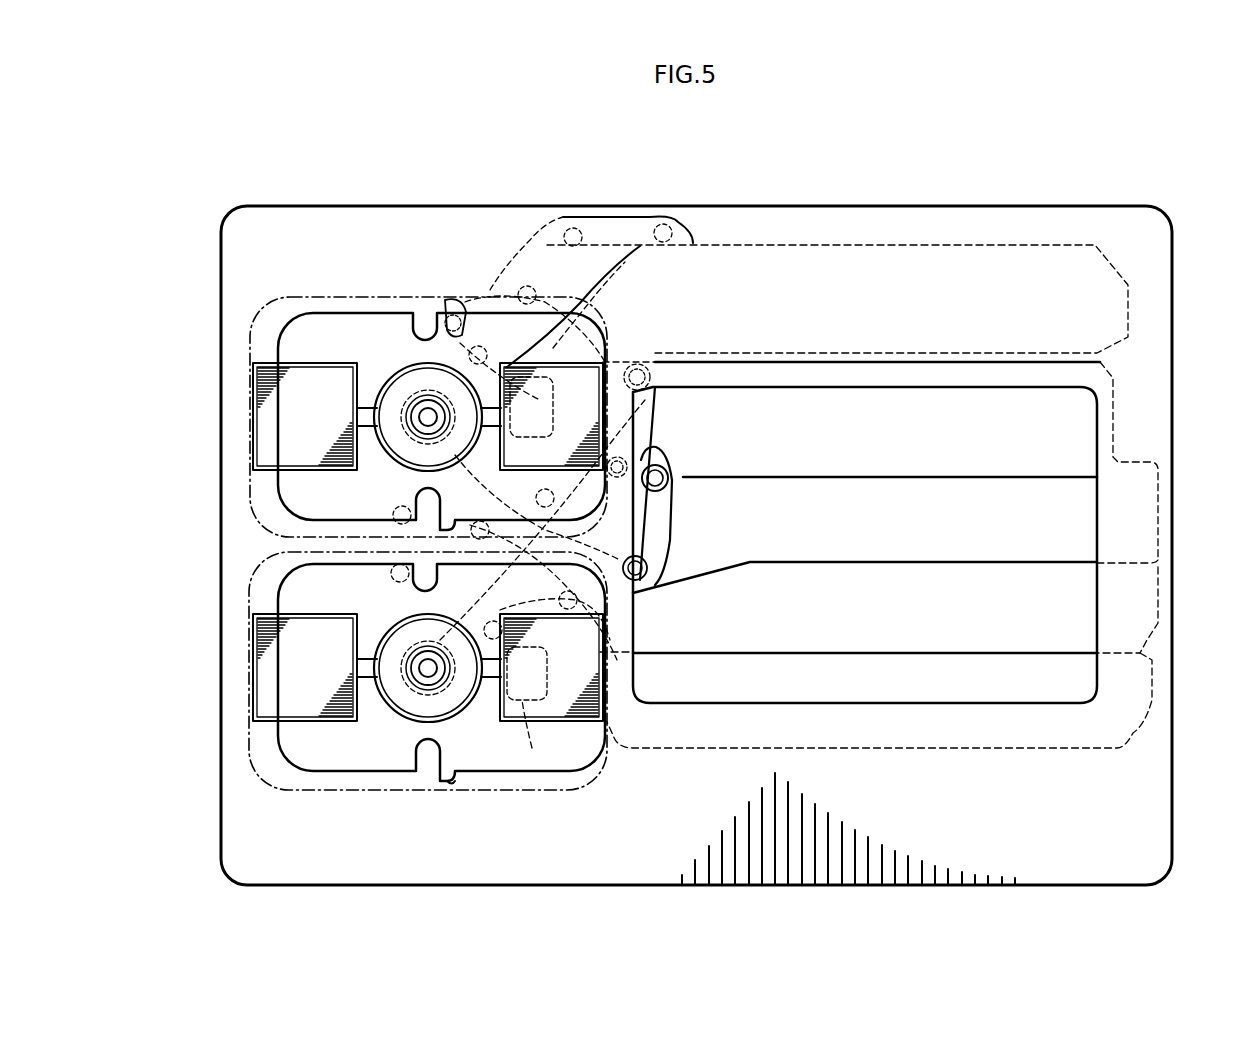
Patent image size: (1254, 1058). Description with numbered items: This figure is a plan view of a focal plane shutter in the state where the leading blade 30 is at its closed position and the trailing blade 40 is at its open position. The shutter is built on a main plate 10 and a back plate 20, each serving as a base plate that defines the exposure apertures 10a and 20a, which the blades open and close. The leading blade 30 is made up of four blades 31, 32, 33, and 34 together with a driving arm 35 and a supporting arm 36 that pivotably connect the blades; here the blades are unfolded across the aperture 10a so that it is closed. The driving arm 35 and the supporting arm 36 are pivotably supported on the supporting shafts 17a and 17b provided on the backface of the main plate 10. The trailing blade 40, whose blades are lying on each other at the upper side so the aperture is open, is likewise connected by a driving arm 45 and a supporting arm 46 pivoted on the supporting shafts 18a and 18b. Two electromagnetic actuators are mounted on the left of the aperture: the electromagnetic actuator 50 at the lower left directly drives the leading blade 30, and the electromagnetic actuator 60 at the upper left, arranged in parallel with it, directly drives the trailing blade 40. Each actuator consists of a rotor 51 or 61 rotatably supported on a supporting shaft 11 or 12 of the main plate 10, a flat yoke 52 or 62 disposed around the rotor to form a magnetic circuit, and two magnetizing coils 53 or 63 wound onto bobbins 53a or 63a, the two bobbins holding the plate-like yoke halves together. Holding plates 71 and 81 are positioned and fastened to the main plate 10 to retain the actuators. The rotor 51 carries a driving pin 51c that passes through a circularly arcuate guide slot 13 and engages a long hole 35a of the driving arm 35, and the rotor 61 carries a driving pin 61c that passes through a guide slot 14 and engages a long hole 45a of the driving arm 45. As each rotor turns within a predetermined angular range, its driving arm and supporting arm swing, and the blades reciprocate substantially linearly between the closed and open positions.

The main plate 10 is at (696, 512).
The back plate 20 is at (855, 203).
The exposure aperture 10a is at (866, 532).
The exposure aperture 20a is at (855, 388).
The supporting shaft 11 is at (406, 759).
The supporting shaft 17a is at (408, 697).
The supporting shaft 12 is at (381, 328).
The supporting shaft 18a is at (402, 402).
The circularly arcuate guide slot 13 is at (442, 782).
The circularly arcuate guide slot 14 is at (540, 300).
The supporting shaft 17b is at (405, 575).
The supporting shaft 18b is at (465, 530).
The leading blade 30 is at (968, 757).
The blade 31 is at (1117, 420).
The blade 32 is at (1162, 515).
The blade 33 is at (1164, 606).
The blade 34 is at (1155, 684).
The driving arm 35 is at (674, 529).
The long hole 35a is at (532, 748).
The supporting arm 36 is at (648, 435).
The trailing blade 40 is at (999, 241).
The driving arm 45 is at (515, 262).
The long hole 45a is at (497, 282).
The supporting arm 46 is at (388, 483).
The electromagnetic actuator 50 is at (414, 701).
The rotor 51 is at (393, 700).
The driving pin 51c is at (520, 742).
The yoke 52 is at (290, 600).
The magnetizing coil 53 is at (253, 636).
The bobbin 53a is at (600, 738).
The electromagnetic actuator 60 is at (430, 386).
The rotor 61 is at (410, 395).
The driving pin 61c is at (445, 302).
The yoke 62 is at (330, 320).
The magnetizing coil 63 is at (253, 380).
The bobbin 63a is at (620, 362).
The holding plate 71 is at (290, 780).
The holding plate 81 is at (282, 292).